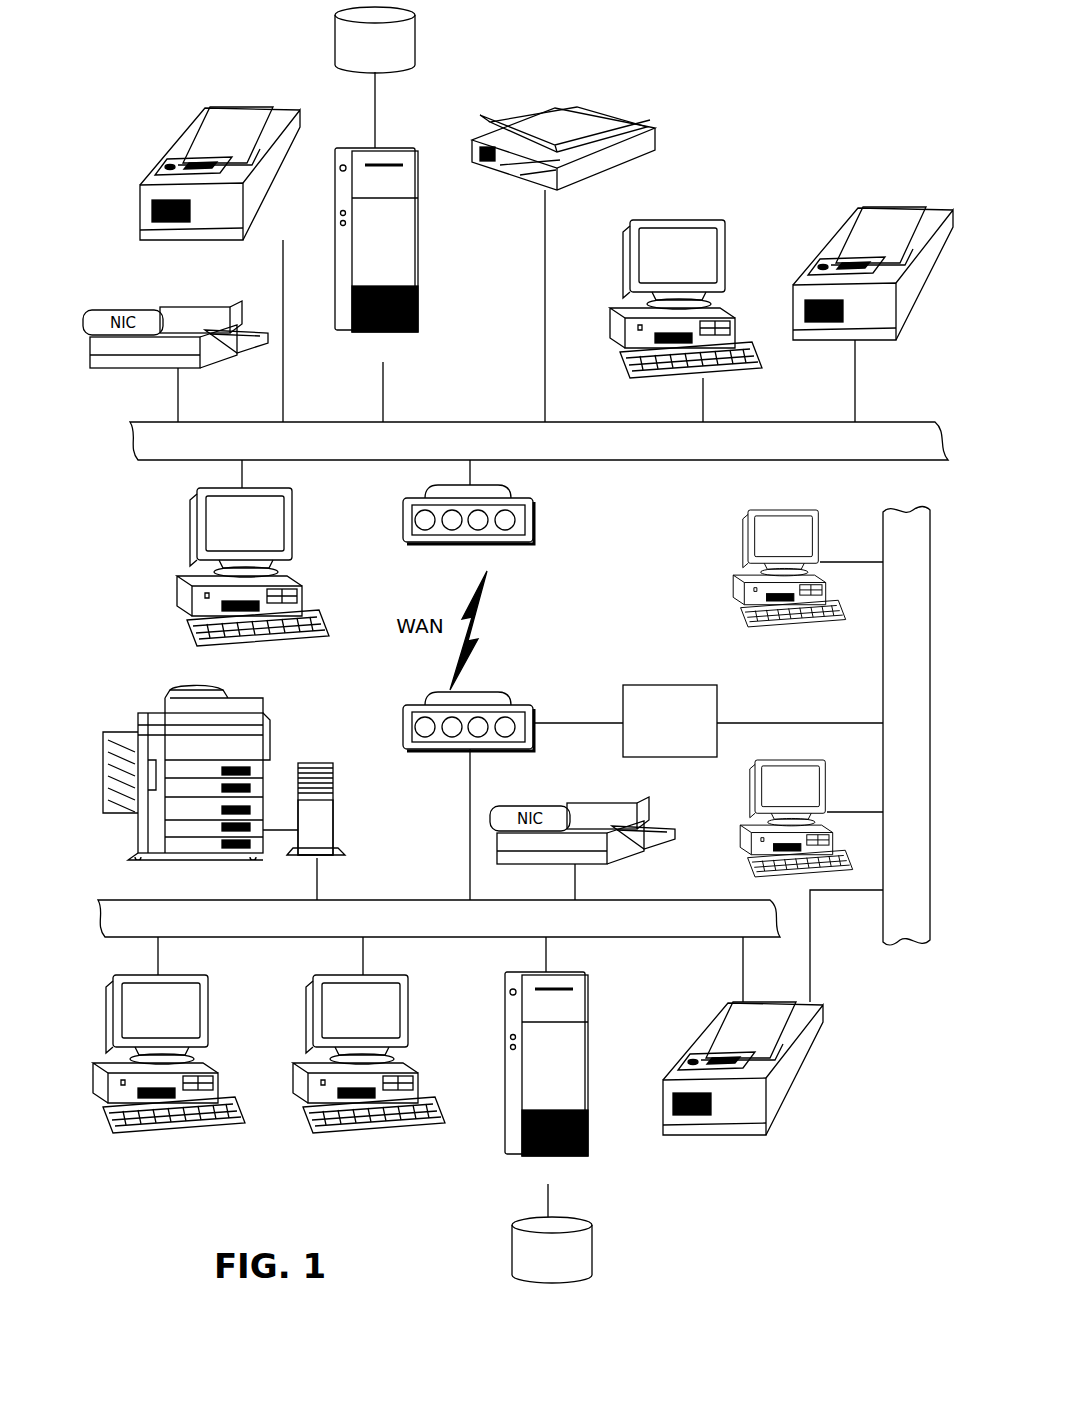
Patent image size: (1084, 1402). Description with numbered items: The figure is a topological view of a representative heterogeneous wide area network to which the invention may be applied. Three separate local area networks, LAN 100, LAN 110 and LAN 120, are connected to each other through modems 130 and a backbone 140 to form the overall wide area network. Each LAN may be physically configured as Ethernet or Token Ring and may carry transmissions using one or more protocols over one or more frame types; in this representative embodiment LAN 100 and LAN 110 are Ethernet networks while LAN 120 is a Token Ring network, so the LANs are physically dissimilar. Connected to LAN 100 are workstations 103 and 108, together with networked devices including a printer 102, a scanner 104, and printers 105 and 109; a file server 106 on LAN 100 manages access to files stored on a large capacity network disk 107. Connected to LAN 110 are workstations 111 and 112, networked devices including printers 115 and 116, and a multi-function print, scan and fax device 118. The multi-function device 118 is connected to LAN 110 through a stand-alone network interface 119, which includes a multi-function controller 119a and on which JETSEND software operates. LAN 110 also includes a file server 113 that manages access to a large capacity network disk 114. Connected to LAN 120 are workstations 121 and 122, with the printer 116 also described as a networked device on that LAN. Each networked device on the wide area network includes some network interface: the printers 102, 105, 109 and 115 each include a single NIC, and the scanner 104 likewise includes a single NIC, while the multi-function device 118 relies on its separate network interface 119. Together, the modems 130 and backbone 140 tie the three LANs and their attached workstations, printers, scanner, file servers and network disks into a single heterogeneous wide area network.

The local area network 100 is at (460, 422).
The printer 102 is at (135, 305).
The workstation 103 is at (195, 545).
The scanner 104 is at (655, 130).
The printer 105 is at (200, 125).
The file server 106 is at (418, 240).
The network disk 107 is at (335, 45).
The workstation 108 is at (727, 268).
The printer 109 is at (905, 207).
The local area network 110 is at (398, 900).
The workstation 111 is at (175, 1125).
The workstation 112 is at (345, 1125).
The file server 113 is at (505, 1047).
The network disk 114 is at (512, 1255).
The printer 115 is at (620, 805).
The printer 116 is at (725, 1135).
The multi-function device 118 is at (215, 855).
The network interface 119 is at (330, 746).
The multi-function controller 119a is at (333, 812).
The local area network 120 is at (883, 672).
The workstation 121 is at (778, 510).
The workstation 122 is at (745, 825).
The modem 130 is at (535, 518).
The backbone 140 is at (662, 685).